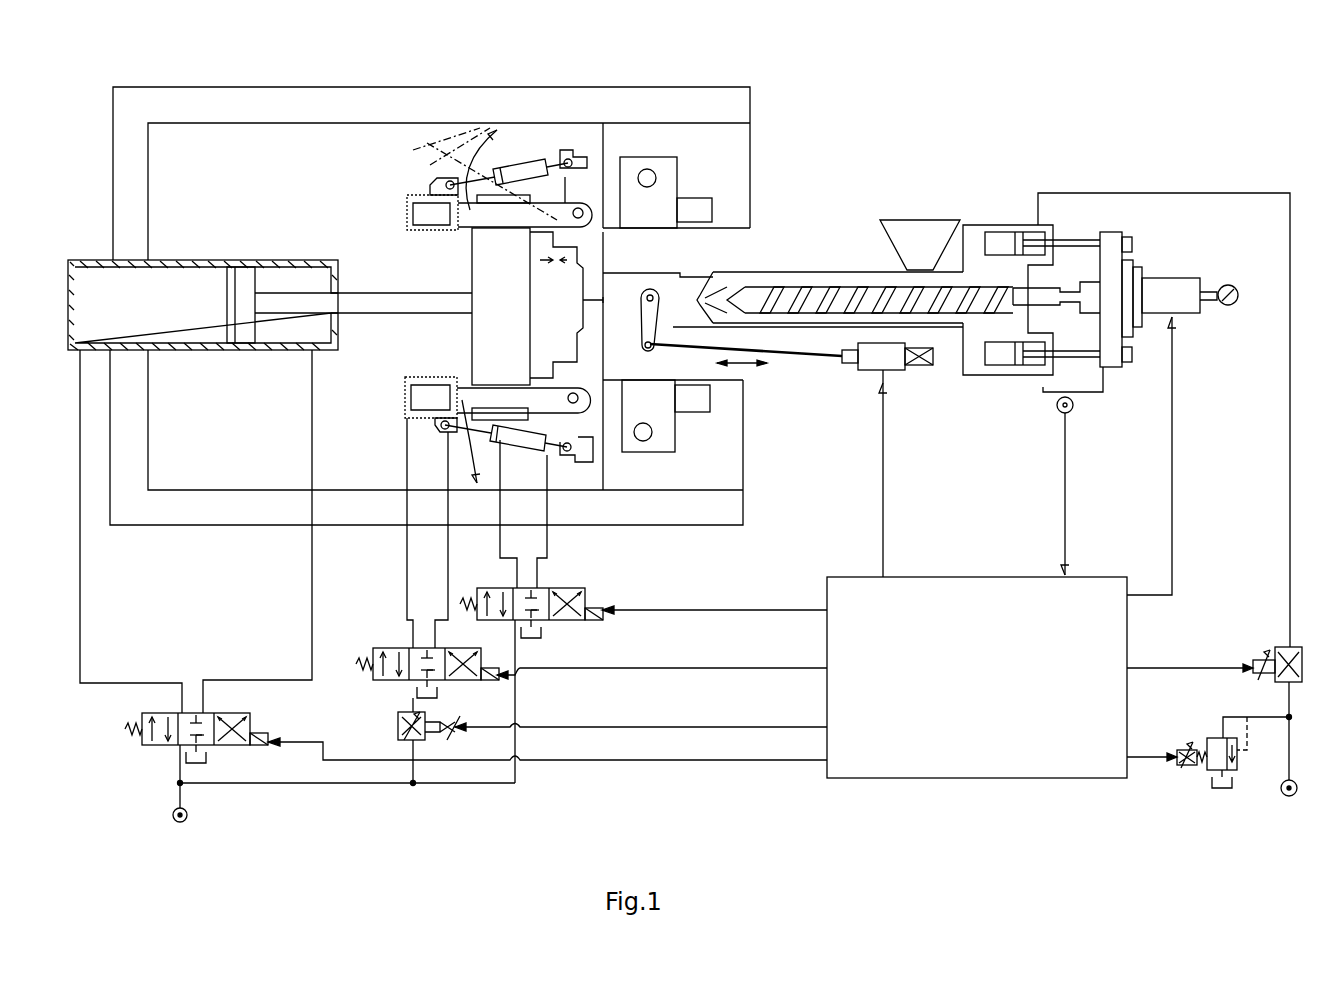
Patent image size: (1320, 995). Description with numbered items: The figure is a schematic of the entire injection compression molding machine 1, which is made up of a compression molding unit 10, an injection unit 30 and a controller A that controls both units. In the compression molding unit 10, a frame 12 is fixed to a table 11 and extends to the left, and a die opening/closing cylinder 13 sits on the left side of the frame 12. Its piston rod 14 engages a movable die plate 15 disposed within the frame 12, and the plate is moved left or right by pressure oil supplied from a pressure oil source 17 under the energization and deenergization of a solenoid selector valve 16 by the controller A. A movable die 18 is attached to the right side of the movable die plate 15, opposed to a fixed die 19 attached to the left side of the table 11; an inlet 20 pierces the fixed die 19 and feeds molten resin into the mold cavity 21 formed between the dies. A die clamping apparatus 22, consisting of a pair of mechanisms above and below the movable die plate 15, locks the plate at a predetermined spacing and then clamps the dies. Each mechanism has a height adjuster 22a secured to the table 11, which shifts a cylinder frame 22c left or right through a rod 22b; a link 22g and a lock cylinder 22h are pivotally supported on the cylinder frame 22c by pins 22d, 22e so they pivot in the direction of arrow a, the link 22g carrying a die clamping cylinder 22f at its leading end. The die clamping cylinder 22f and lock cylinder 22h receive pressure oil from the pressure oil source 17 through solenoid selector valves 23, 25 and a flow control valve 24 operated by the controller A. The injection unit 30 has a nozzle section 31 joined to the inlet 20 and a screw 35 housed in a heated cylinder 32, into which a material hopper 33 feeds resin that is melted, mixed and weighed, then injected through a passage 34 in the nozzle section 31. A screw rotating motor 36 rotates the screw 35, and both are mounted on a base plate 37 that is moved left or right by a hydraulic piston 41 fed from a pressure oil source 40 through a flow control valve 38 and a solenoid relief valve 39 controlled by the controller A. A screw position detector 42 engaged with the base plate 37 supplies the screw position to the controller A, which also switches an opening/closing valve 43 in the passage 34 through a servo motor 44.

The injection compression molding machine 1 is at (1068, 118).
The compression molding unit 10 is at (632, 78).
The table 11 is at (745, 185).
The frame 12 is at (125, 178).
The die opening/closing cylinder 13 is at (213, 260).
The piston rod 14 is at (355, 298).
The movable die plate 15 is at (483, 260).
The solenoid selector valve 16 is at (150, 745).
The pressure oil source 17 is at (173, 812).
The movable die 18 is at (550, 295).
The fixed die 19 is at (605, 245).
The inlet 20 is at (603, 297).
The mold cavity 21 is at (570, 340).
The die clamping apparatus 22 is at (464, 154).
The height adjuster 22a is at (660, 180).
The rod 22b is at (695, 210).
The cylinder frame 22c is at (605, 195).
The pin 22d is at (680, 210).
The pin 22e is at (580, 158).
The die clamping cylinder 22f is at (410, 205).
The link 22g is at (458, 220).
The lock cylinder 22h is at (547, 165).
The solenoid selector valve 23 is at (380, 682).
The flow control valve 24 is at (398, 740).
The solenoid selector valve 25 is at (570, 622).
The injection unit 30 is at (992, 190).
The nozzle section 31 is at (553, 362).
The cylinder 32 is at (805, 272).
The material hopper 33 is at (925, 228).
The passage 34 is at (700, 295).
The screw 35 is at (848, 295).
The screw rotating motor 36 is at (1170, 290).
The base plate 37 is at (1112, 240).
The flow control valve 38 is at (1277, 647).
The solenoid relief valve 39 is at (1210, 770).
The pressure oil source 40 is at (1289, 797).
The hydraulic piston 41 is at (970, 368).
The screw position detector 42 is at (1062, 408).
The opening/closing valve 43 is at (775, 340).
The servo motor 44 is at (893, 370).
The controller A is at (963, 778).
The arrow a is at (484, 130).